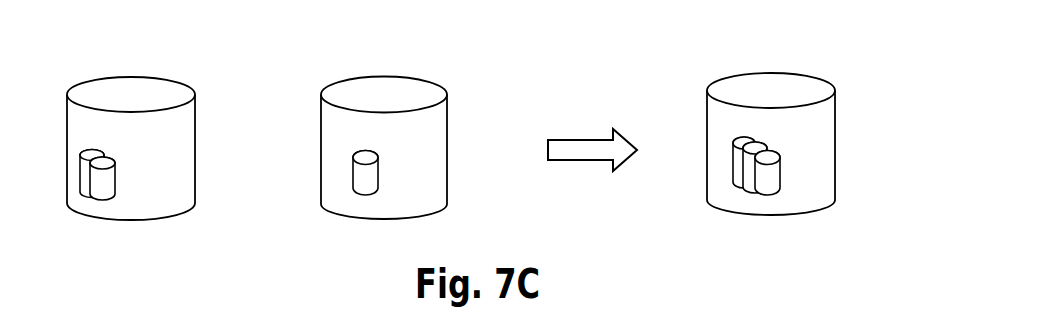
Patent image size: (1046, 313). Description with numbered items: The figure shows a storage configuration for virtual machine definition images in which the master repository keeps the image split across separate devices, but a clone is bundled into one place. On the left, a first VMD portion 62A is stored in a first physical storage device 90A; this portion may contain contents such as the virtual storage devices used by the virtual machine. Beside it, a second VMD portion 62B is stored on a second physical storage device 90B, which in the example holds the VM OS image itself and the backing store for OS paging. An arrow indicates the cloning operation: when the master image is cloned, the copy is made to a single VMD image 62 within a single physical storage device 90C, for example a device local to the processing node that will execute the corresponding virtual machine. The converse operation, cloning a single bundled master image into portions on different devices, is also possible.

The first physical storage device 90A is at (168, 91).
The first VMD portion 62A is at (113, 163).
The second physical storage device 90B is at (400, 89).
The second VMD portion 62B is at (372, 160).
The single physical storage device 90C is at (785, 85).
The VMD image 62 is at (768, 150).